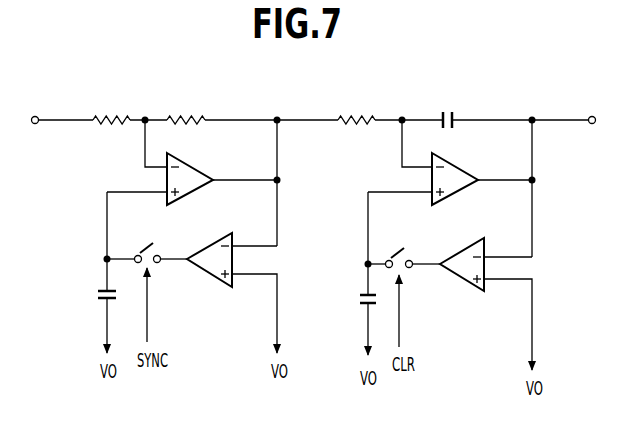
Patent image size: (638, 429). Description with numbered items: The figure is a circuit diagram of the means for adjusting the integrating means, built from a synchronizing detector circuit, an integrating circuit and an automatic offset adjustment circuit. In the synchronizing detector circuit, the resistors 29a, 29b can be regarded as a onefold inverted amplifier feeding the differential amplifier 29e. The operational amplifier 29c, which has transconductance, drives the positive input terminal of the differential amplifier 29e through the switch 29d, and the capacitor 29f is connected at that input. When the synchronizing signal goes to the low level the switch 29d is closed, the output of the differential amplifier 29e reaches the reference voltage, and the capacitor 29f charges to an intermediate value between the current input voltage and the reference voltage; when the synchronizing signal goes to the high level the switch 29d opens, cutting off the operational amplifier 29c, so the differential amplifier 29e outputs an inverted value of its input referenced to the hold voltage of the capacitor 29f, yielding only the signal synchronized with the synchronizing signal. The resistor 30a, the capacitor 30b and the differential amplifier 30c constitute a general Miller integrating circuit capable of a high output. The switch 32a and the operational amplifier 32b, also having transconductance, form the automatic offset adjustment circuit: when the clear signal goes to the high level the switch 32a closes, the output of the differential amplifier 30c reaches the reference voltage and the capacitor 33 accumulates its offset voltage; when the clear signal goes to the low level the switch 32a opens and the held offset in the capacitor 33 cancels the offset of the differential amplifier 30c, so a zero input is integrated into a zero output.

The resistor 29a is at (109, 113).
The resistor 29b is at (192, 113).
The operational amplifier 29c is at (210, 273).
The switch 29d is at (152, 244).
The differential amplifier 29e is at (190, 170).
The capacitor 29f is at (98, 294).
The resistor 30a is at (357, 113).
The capacitor 30b is at (449, 110).
The differential amplifier 30c is at (455, 170).
The switch 32a is at (398, 250).
The operational amplifier 32b is at (465, 280).
The capacitor 33 is at (362, 298).